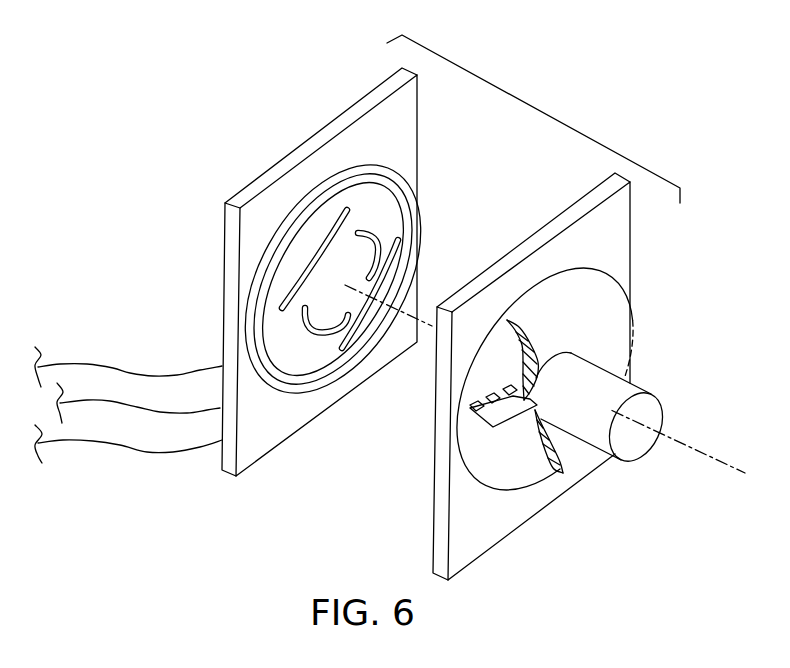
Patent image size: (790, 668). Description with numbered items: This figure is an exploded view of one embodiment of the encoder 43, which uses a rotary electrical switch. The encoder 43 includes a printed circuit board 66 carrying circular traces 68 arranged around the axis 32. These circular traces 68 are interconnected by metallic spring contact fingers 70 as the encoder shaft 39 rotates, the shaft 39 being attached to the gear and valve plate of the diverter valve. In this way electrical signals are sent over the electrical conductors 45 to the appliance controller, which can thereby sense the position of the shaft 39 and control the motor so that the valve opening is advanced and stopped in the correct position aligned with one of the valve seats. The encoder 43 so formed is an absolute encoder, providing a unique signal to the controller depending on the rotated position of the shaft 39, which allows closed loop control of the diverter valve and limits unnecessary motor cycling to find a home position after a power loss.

The encoder 43 is at (427, 127).
The printed circuit board 66 is at (243, 188).
The circular traces 68 is at (408, 196).
The electrical conductors 45 is at (132, 447).
The metallic spring contact fingers 70 is at (470, 462).
The encoder shaft 39 is at (600, 381).
The axis 32 is at (705, 452).